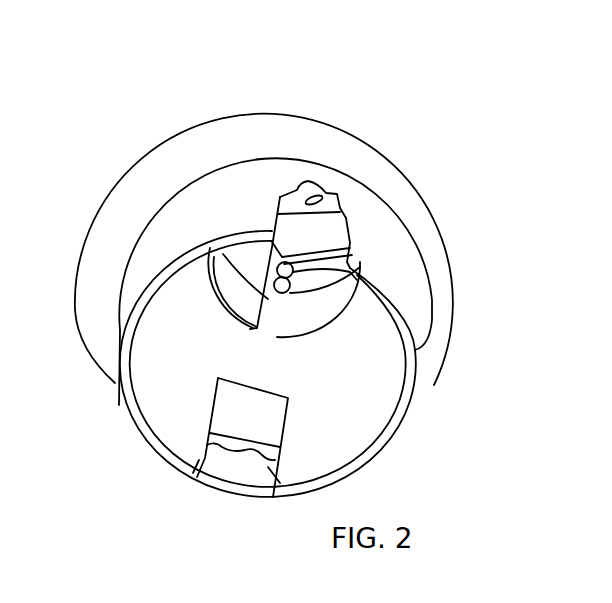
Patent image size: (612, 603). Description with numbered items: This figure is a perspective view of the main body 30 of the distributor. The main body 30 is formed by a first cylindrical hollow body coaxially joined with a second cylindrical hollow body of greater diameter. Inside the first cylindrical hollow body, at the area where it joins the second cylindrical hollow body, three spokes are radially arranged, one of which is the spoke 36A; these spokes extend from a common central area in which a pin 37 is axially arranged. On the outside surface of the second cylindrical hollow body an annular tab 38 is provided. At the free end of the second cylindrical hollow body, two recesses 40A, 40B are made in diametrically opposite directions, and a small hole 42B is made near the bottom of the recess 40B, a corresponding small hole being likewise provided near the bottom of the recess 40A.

The main body 30 is at (250, 88).
The annular tab 38 is at (140, 152).
The spoke 36A is at (271, 318).
The pin 37 is at (382, 306).
The recess 40A is at (212, 455).
The recess 40B is at (352, 207).
The small hole 42B is at (332, 192).